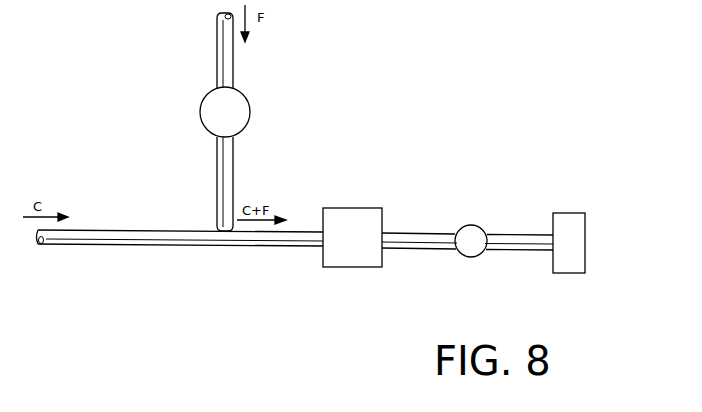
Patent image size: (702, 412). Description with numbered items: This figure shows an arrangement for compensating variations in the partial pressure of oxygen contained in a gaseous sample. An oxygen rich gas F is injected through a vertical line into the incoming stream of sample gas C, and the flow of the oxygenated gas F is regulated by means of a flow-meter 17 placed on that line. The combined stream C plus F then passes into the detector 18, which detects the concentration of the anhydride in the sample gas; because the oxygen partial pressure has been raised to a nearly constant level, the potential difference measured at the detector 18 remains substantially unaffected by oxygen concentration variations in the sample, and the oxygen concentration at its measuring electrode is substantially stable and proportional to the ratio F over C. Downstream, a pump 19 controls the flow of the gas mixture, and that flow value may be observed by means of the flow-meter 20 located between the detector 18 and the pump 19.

The flow-meter 17 is at (240, 117).
The detector 18 is at (350, 218).
The pump 19 is at (568, 222).
The flow-meter 20 is at (470, 233).